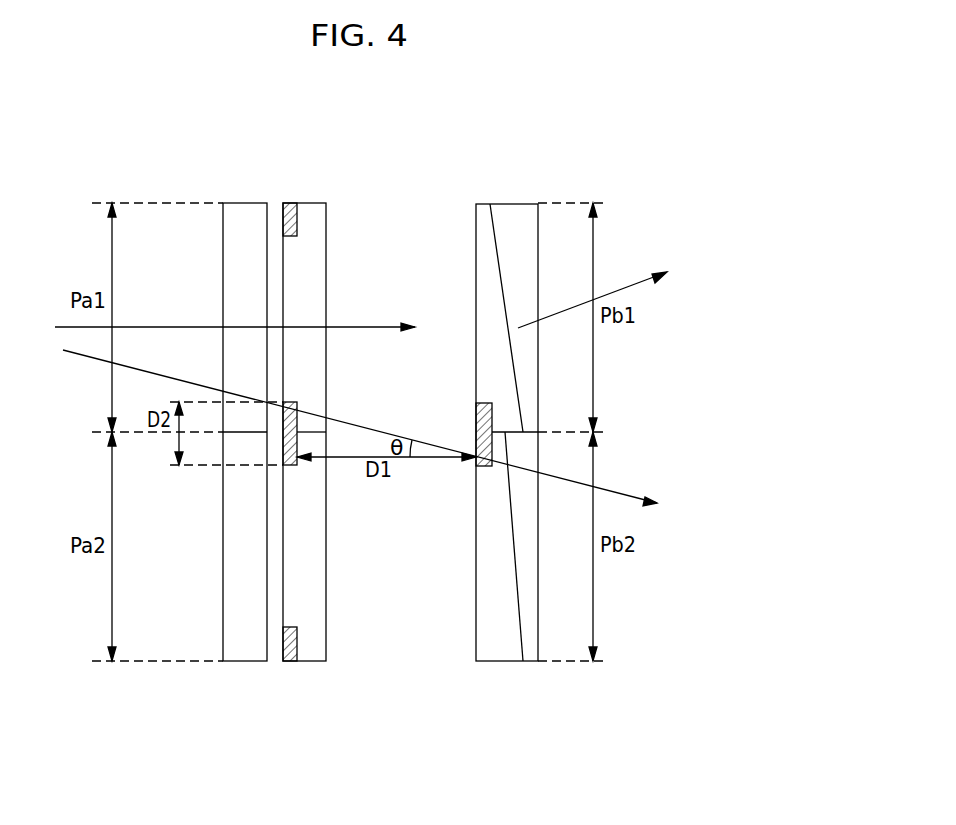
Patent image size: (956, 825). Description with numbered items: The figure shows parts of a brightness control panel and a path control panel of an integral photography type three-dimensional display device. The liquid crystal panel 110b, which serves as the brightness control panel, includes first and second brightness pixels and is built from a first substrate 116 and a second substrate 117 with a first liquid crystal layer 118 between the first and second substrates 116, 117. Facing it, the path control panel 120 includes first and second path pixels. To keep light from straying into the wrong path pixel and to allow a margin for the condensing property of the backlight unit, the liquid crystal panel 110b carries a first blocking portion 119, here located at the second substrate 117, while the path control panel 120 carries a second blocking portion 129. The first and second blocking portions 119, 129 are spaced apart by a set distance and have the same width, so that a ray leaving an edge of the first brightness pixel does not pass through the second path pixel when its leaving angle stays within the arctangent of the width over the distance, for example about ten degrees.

The liquid crystal panel 110b is at (311, 414).
The first substrate 116 is at (228, 662).
The second substrate 117 is at (316, 662).
The first liquid crystal layer 118 is at (274, 662).
The first blocking portion 119 is at (298, 632).
The path control panel 120 is at (481, 359).
The second blocking portion 129 is at (476, 420).